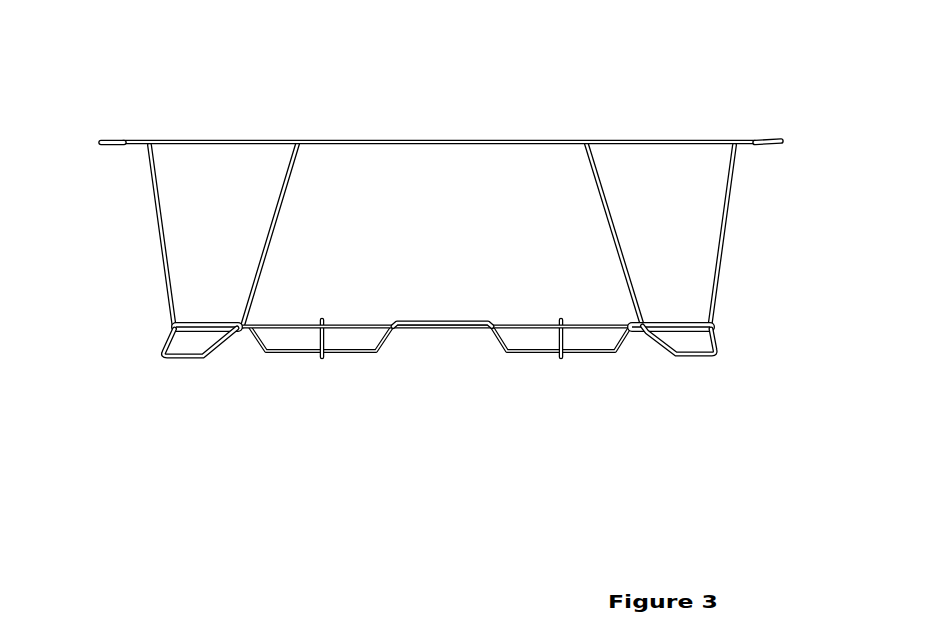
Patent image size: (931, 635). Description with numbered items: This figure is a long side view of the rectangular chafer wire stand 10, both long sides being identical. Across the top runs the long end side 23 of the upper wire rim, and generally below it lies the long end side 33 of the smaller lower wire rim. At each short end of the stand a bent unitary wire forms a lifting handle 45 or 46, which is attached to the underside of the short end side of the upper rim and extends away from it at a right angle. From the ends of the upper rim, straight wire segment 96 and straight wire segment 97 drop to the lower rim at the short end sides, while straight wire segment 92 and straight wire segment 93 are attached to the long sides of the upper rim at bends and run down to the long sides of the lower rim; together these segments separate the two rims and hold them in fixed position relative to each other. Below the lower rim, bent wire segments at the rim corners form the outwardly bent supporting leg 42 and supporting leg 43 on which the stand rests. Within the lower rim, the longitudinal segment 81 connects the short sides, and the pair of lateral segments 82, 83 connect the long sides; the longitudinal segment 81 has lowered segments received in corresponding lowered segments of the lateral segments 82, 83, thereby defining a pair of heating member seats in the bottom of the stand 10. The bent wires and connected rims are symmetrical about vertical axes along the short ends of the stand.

The chafer wire stand 10 is at (712, 100).
The long end side 23 is at (452, 140).
The handle 45 is at (102, 142).
The handle 46 is at (782, 143).
The straight wire segment 96 is at (162, 245).
The straight wire segment 97 is at (720, 247).
The straight wire segment 92 is at (265, 239).
The straight wire segment 93 is at (612, 218).
The supporting leg 42 is at (182, 357).
The supporting leg 43 is at (697, 358).
The long end side 33 is at (433, 330).
The lateral segment 82 is at (322, 358).
The longitudinal segment 81 is at (520, 350).
The lateral segment 83 is at (563, 347).